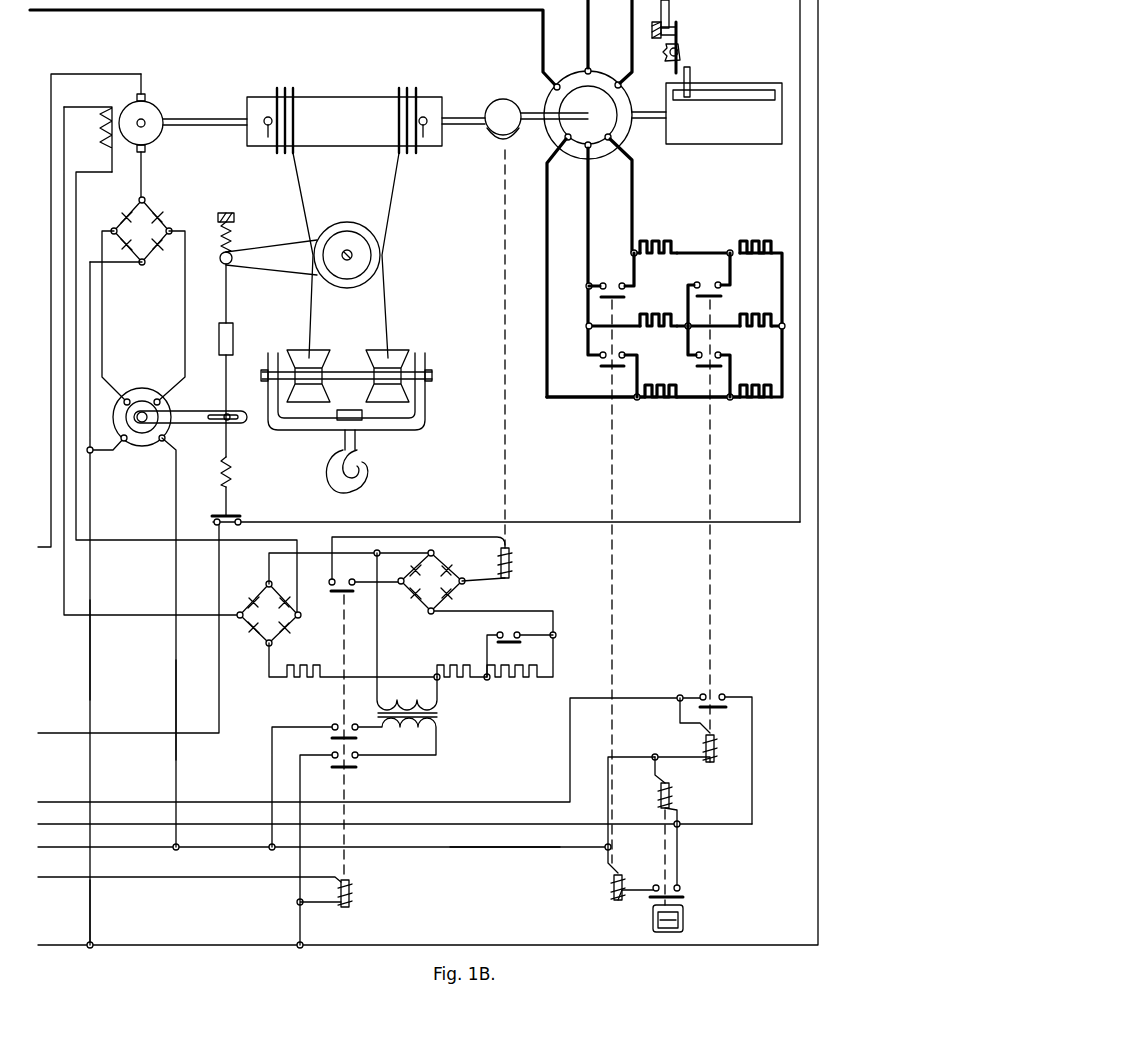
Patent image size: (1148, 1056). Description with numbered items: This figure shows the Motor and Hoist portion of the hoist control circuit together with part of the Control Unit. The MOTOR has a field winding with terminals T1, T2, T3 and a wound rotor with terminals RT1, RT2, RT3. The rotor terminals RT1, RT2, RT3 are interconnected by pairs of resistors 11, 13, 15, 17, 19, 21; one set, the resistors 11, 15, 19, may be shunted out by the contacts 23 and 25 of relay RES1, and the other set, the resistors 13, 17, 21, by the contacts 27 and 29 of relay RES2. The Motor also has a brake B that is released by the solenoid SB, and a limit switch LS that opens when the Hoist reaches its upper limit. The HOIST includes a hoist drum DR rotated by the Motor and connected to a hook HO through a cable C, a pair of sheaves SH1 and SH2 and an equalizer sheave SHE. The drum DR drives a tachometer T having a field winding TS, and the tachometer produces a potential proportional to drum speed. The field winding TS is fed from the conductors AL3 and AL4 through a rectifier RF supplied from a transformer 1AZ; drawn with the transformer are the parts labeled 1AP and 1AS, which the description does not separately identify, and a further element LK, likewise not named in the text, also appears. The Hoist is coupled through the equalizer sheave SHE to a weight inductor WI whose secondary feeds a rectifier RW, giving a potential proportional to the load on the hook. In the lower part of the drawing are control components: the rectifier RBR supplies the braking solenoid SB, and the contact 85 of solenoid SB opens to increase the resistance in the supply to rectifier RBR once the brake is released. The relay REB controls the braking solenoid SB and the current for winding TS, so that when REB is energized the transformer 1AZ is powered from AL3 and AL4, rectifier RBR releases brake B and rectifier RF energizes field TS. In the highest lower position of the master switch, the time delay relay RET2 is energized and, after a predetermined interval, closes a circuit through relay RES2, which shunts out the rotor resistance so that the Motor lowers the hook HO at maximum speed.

The field winding TS is at (108, 110).
The tachometer T is at (157, 106).
The hoist drum DR is at (342, 97).
The cable C is at (392, 203).
The brake B is at (490, 104).
The Motor MOTOR is at (628, 147).
The field winding terminal T1 is at (616, 82).
The field winding terminal T2 is at (586, 68).
The field winding terminal T3 is at (553, 87).
The rotor terminal RT1 is at (609, 140).
The rotor terminal RT2 is at (587, 148).
The rotor terminal RT3 is at (565, 139).
The limit switch LS is at (679, 36).
The rectifier RW is at (146, 205).
The weight inductor WI is at (146, 390).
The load limit switch LK is at (238, 514).
The equalizer sheave SHE is at (333, 224).
The Hoist HOIST is at (359, 385).
The sheave SH1 is at (320, 352).
The sheave SH2 is at (400, 350).
The hook HO is at (326, 462).
The resistor 11 is at (758, 245).
The resistor 13 is at (655, 245).
The resistor 15 is at (764, 312).
The resistor 17 is at (672, 312).
The resistor 19 is at (764, 386).
The resistor 21 is at (652, 400).
The contact 23 is at (706, 284).
The contact 25 is at (696, 364).
The contact 27 is at (612, 284).
The contact 29 is at (600, 364).
The rectifier RF is at (250, 637).
The rectifier RBR is at (408, 603).
The solenoid SB is at (511, 570).
The contact 85 is at (500, 632).
The relay secondary coil 1AS is at (407, 631).
The transformer 1AZ is at (440, 717).
The relay primary coil 1AP is at (413, 735).
The relay REB is at (352, 888).
The relay RES1 is at (700, 744).
The time delay relay RET2 is at (672, 795).
The relay RES2 is at (610, 880).
The conductor AL3 is at (92, 645).
The conductor AL4 is at (175, 690).